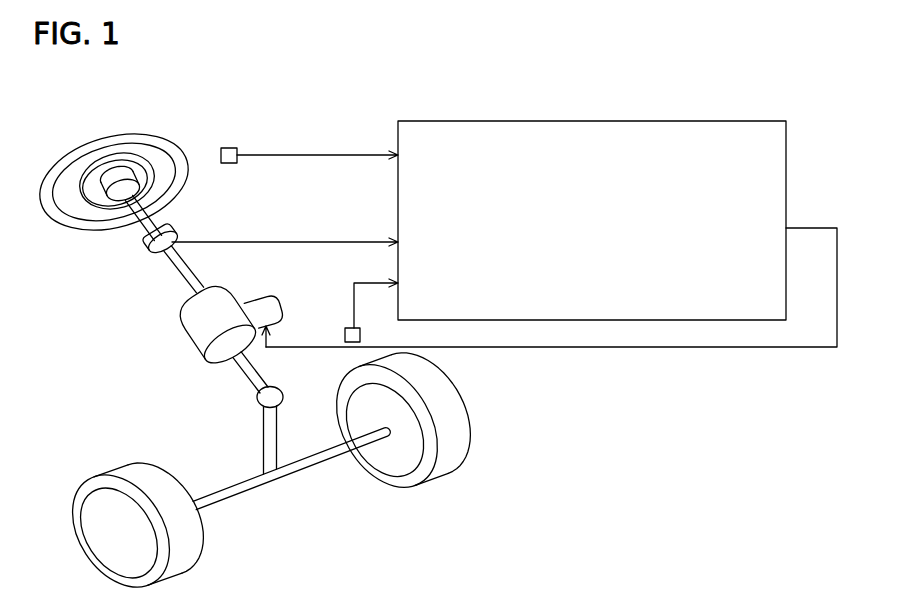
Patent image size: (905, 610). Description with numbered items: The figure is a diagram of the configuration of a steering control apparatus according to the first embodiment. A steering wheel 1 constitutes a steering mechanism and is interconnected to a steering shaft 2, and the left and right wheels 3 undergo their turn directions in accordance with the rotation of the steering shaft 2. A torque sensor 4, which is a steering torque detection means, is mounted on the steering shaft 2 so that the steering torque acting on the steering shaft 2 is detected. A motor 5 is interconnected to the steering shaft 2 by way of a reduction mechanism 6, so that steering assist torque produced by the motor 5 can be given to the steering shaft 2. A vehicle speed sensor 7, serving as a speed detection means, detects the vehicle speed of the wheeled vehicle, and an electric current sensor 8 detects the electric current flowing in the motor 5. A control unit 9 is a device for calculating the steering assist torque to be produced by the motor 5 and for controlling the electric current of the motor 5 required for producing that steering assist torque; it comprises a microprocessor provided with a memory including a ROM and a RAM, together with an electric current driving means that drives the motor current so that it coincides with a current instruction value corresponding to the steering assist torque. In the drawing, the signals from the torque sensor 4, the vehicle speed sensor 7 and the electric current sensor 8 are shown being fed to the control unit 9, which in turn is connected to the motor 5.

The steering wheel 1 is at (170, 137).
The steering shaft 2 is at (164, 269).
The wheels 3 is at (160, 470).
The torque sensor 4 is at (172, 229).
The motor 5 is at (259, 297).
The reduction mechanism 6 is at (182, 326).
The vehicle speed sensor 7 is at (229, 147).
The electric current sensor 8 is at (344, 334).
The control unit 9 is at (790, 147).